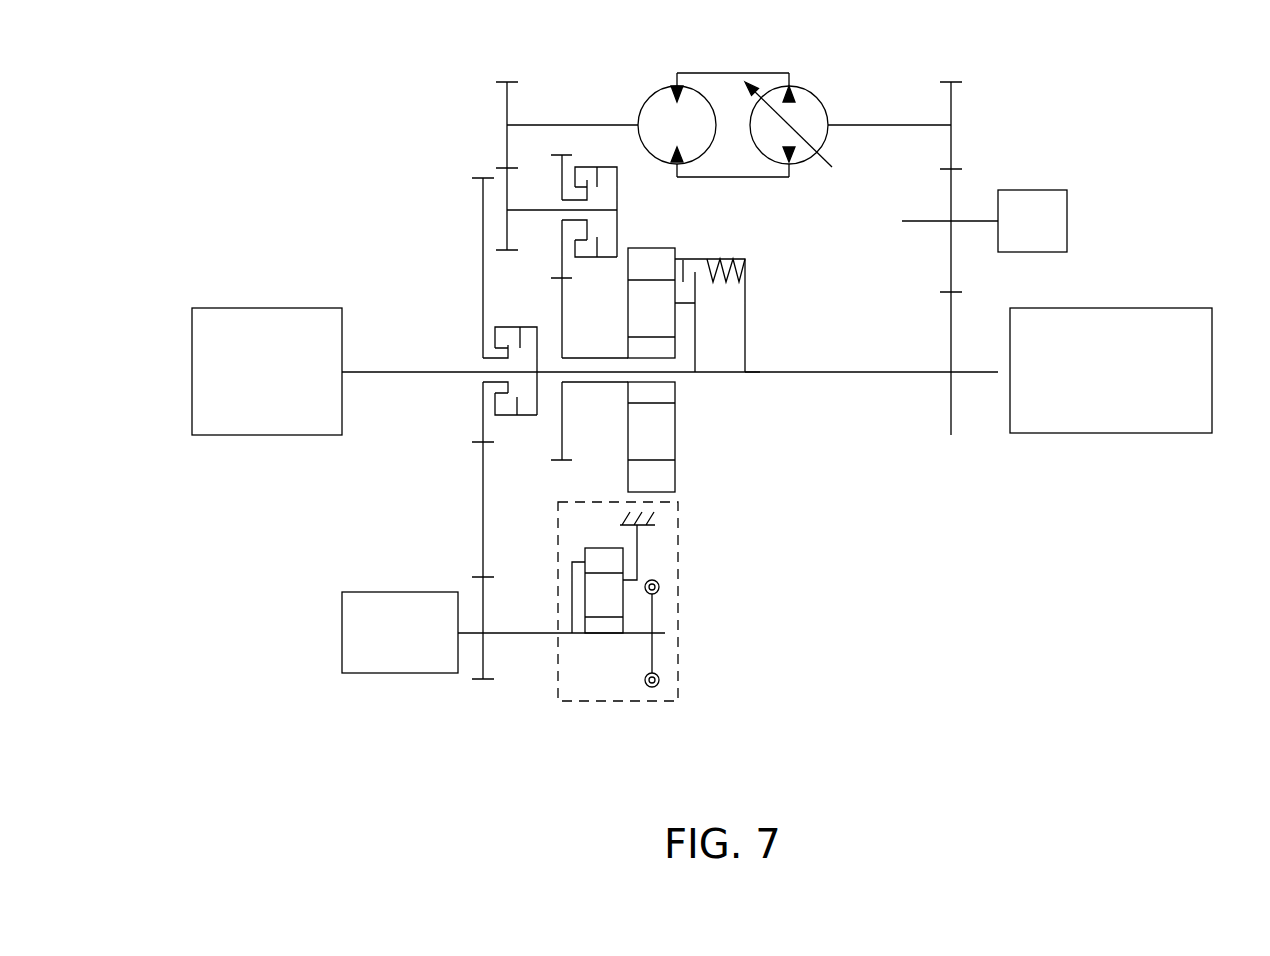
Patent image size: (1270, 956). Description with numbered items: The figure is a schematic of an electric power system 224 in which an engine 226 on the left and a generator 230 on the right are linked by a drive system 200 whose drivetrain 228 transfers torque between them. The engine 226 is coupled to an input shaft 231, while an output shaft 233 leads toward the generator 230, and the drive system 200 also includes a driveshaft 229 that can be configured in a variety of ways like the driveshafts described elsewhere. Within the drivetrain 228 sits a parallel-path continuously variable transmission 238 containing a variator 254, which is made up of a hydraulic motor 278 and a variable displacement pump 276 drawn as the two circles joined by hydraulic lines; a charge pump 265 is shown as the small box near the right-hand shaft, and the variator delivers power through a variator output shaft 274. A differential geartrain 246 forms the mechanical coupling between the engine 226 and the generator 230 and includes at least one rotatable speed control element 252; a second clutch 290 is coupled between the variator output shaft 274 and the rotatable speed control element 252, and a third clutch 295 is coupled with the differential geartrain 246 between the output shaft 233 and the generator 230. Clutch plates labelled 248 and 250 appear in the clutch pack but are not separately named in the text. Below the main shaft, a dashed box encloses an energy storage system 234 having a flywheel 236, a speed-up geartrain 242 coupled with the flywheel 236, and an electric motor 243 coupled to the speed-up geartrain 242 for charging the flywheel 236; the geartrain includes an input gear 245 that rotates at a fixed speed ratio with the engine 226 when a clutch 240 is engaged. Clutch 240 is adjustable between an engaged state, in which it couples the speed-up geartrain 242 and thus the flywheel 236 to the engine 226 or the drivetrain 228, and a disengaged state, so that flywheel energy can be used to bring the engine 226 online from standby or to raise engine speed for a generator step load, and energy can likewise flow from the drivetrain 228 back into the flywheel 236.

The drive system 200 is at (830, 496).
The electric power system 224 is at (1043, 127).
The engine 226 is at (260, 308).
The drivetrain 228 is at (715, 385).
The driveshaft 229 is at (857, 374).
The generator 230 is at (1105, 308).
The input shaft 231 is at (545, 372).
The output shaft 233 is at (681, 256).
The energy storage system 234 is at (619, 640).
The flywheel 236 is at (672, 680).
The parallel-path continuously variable transmission 238 is at (729, 94).
The clutch 240 is at (514, 445).
The speed-up geartrain 242 is at (582, 600).
The electric motor 243 is at (395, 592).
The input gear 245 is at (590, 548).
The differential geartrain 246 is at (750, 290).
The clutch plate 248 is at (628, 295).
The clutch pack 250 is at (621, 274).
The rotatable speed control element 252 is at (628, 345).
The variator 254 is at (729, 94).
The charge pump 265 is at (1067, 210).
The variator output shaft 274 is at (547, 123).
The variable displacement pump 276 is at (813, 87).
The hydraulic motor 278 is at (653, 87).
The second clutch 290 is at (594, 153).
The third clutch 295 is at (757, 268).